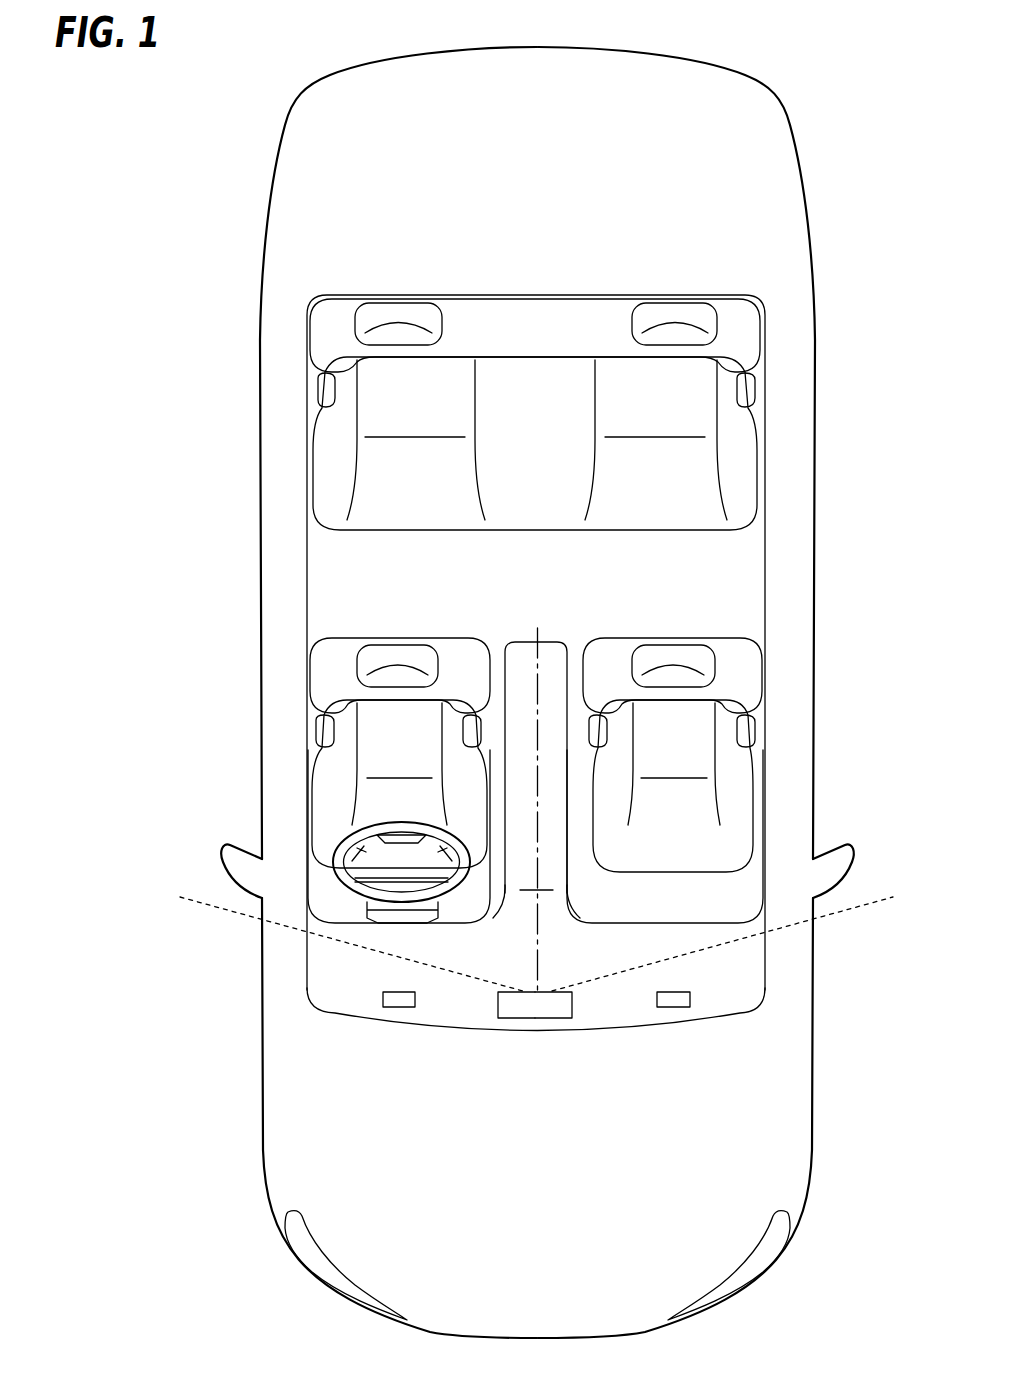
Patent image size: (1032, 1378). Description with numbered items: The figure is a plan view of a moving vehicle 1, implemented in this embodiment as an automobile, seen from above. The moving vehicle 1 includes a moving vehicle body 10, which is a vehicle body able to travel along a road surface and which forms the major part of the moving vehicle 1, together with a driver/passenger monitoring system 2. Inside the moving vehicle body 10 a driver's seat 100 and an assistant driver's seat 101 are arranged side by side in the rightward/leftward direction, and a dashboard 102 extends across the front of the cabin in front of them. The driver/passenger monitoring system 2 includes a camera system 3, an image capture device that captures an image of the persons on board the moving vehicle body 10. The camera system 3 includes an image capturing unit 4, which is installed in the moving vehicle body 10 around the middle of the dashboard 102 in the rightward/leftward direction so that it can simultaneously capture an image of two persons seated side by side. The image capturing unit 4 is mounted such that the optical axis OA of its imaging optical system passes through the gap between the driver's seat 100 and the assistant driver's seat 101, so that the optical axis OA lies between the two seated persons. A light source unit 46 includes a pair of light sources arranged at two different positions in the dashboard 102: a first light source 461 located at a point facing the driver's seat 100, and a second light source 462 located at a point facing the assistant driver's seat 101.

The moving vehicle 1 is at (816, 239).
The moving vehicle body 10 is at (805, 589).
The driver's seat 100 is at (343, 742).
The assistant driver's seat 101 is at (740, 790).
The dashboard 102 is at (735, 991).
The driver/passenger monitoring system 2 is at (503, 1020).
The camera system 3 is at (535, 1013).
The image capturing unit 4 is at (555, 1016).
The light source unit 46 is at (389, 1009).
The first light source 461 is at (406, 1009).
The second light source 462 is at (674, 1008).
The optical axis OA is at (540, 624).